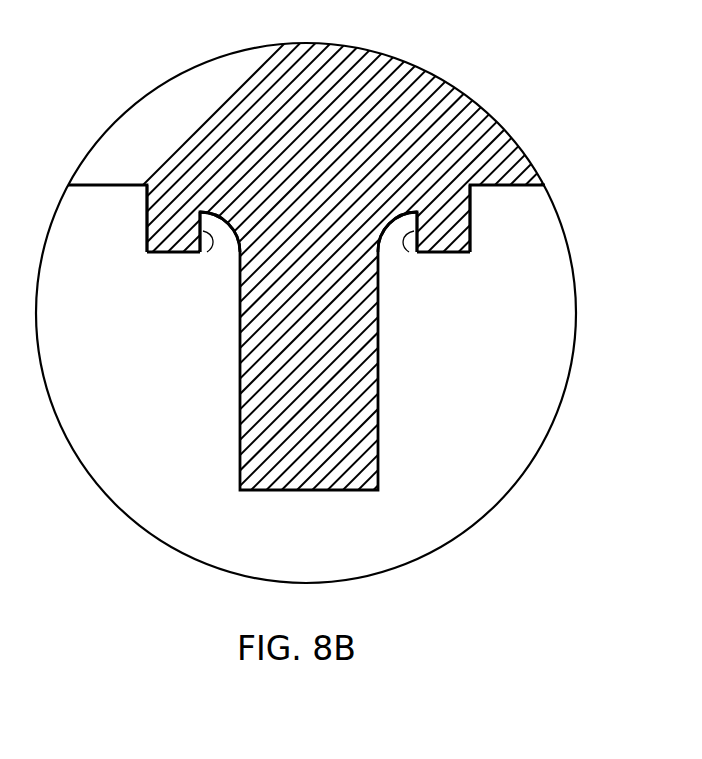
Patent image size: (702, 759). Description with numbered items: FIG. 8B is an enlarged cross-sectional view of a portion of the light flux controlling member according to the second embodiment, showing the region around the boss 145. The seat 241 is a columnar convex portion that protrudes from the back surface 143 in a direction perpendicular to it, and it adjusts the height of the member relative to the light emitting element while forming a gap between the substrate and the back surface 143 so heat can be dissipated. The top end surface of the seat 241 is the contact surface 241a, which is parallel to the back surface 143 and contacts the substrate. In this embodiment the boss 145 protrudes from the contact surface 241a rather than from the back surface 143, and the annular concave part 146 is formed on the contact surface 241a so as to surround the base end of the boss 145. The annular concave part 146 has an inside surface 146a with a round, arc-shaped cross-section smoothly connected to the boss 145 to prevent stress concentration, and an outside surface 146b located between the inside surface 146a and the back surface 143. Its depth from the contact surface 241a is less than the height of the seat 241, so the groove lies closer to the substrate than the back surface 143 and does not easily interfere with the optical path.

The back surface 143 is at (128, 187).
The boss 145 is at (349, 459).
The annular concave part 146 is at (217, 259).
The inside surface 146a is at (234, 245).
The outside surface 146b is at (210, 249).
The seat 241 is at (147, 243).
The contact surface 241a is at (173, 253).